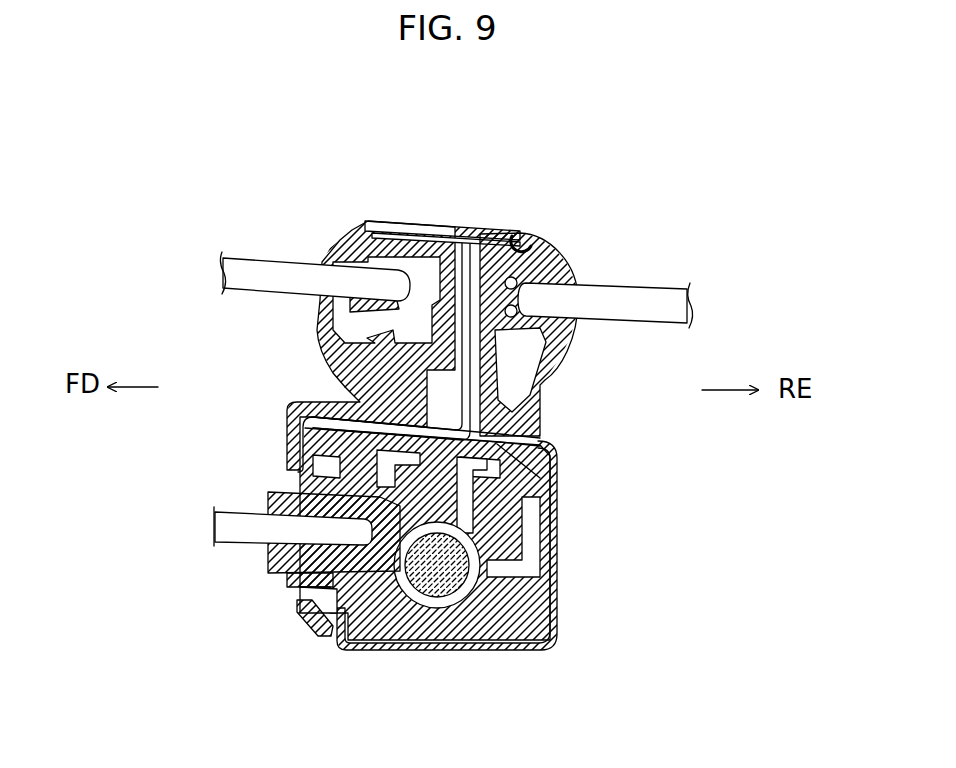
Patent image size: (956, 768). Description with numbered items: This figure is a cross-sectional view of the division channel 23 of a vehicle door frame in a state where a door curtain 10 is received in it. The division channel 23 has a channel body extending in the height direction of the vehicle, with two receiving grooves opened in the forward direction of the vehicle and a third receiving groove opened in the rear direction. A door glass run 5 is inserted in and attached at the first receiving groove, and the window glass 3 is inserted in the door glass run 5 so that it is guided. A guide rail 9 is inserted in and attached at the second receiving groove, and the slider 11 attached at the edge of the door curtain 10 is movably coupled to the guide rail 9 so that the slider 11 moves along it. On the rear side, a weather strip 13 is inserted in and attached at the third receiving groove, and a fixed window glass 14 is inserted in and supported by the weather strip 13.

The window glass 3 is at (264, 260).
The door glass run 5 is at (345, 237).
The guide rail 9 is at (320, 628).
The door curtain 10 is at (228, 535).
The slider 11 is at (273, 560).
The weather strip 13 is at (538, 421).
The fixed window glass 14 is at (620, 283).
The division channel 23 is at (503, 666).